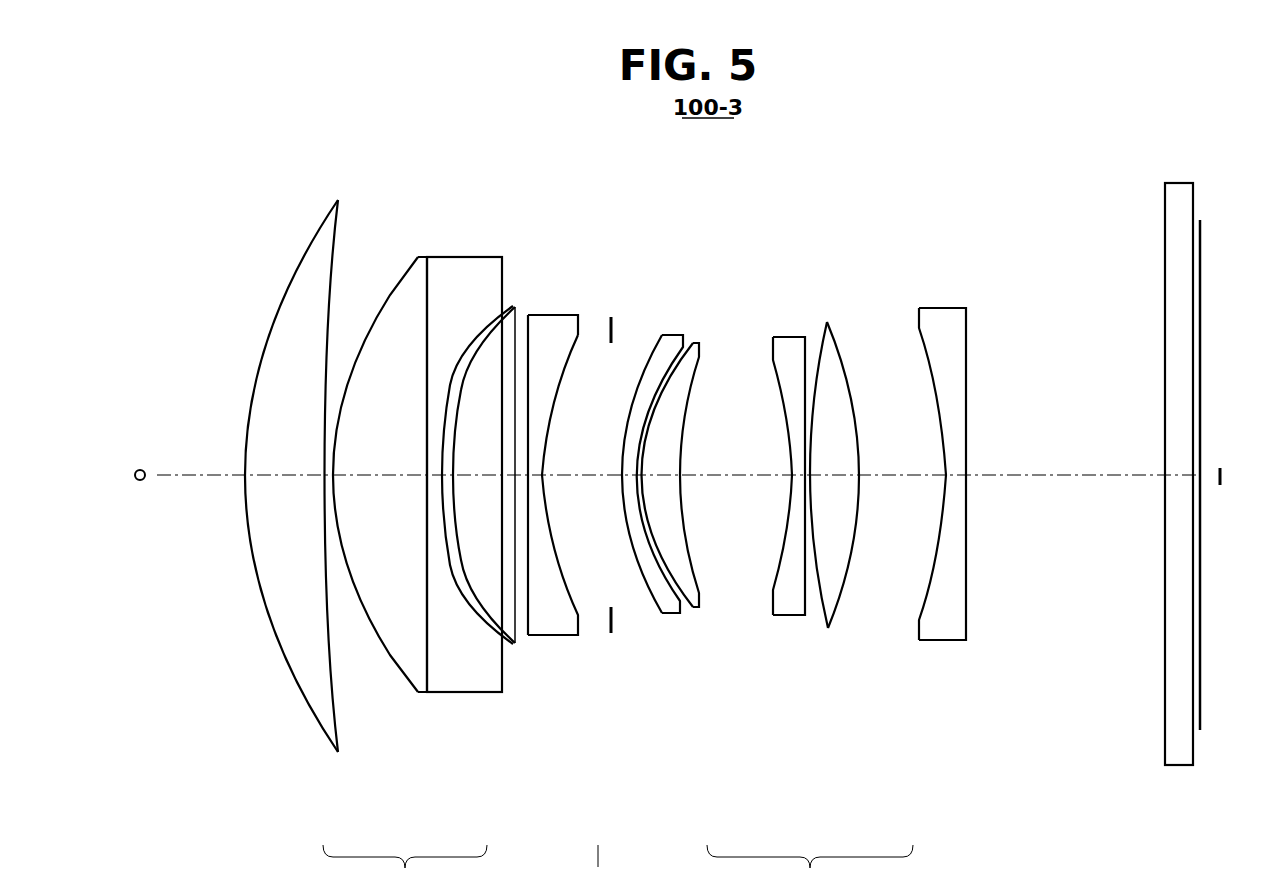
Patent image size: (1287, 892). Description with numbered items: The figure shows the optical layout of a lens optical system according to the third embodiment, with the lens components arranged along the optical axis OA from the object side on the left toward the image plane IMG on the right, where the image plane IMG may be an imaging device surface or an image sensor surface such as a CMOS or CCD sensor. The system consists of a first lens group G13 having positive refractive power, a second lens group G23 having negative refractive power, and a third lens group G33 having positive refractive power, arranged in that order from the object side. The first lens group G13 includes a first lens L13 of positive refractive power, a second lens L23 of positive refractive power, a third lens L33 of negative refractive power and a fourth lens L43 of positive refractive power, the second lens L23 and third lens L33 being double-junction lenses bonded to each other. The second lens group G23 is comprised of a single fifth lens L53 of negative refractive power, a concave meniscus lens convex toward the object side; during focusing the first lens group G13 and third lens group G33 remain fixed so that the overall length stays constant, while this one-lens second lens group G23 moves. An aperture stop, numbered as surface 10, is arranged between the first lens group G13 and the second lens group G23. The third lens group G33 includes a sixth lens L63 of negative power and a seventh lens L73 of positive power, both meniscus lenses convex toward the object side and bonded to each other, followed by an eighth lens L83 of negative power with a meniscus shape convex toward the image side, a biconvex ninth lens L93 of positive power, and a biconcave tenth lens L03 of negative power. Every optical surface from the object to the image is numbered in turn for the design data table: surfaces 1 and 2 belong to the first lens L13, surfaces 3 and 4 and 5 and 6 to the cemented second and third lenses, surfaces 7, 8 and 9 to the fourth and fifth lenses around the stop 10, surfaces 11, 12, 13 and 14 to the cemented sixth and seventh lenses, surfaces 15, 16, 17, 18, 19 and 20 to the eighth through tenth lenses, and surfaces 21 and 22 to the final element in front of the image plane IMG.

The lens surface number 1 is at (287, 282).
The lens surface number 2 is at (333, 278).
The lens surface number 3 is at (378, 308).
The lens surface number 4 is at (430, 285).
The lens surface number 5 is at (463, 370).
The lens surface number 6 is at (476, 352).
The lens surface number 7 is at (518, 340).
The lens surface number 8 is at (529, 358).
The lens surface number 9 is at (553, 333).
The surface number 10 (aperture ST) 10 is at (610, 317).
The lens surface number 11 is at (647, 352).
The lens surface number 12 is at (670, 363).
The lens surface number 13 is at (690, 390).
The lens surface number 14 is at (697, 365).
The lens surface number 15 is at (778, 373).
The lens surface number 16 is at (809, 357).
The lens surface number 17 is at (830, 340).
The lens surface number 18 is at (848, 363).
The lens surface number 19 is at (933, 360).
The lens surface number 20 is at (965, 343).
The surface number 21 is at (1162, 202).
The surface number 22 is at (1200, 292).
The optical axis OA is at (200, 477).
The image plane IMG is at (1200, 700).
The first lens L13 is at (300, 494).
The second lens L23 is at (383, 501).
The third lens L33 is at (451, 672).
The fourth lens L43 is at (478, 519).
The fifth lens L53 is at (570, 524).
The sixth lens L63 is at (674, 529).
The seventh lens L73 is at (711, 559).
The eighth lens L83 is at (800, 529).
The ninth lens L93 is at (850, 527).
The tenth lens L03 is at (949, 525).
The first lens group G13 is at (405, 868).
The second lens group G23 is at (600, 868).
The third lens group G33 is at (810, 868).